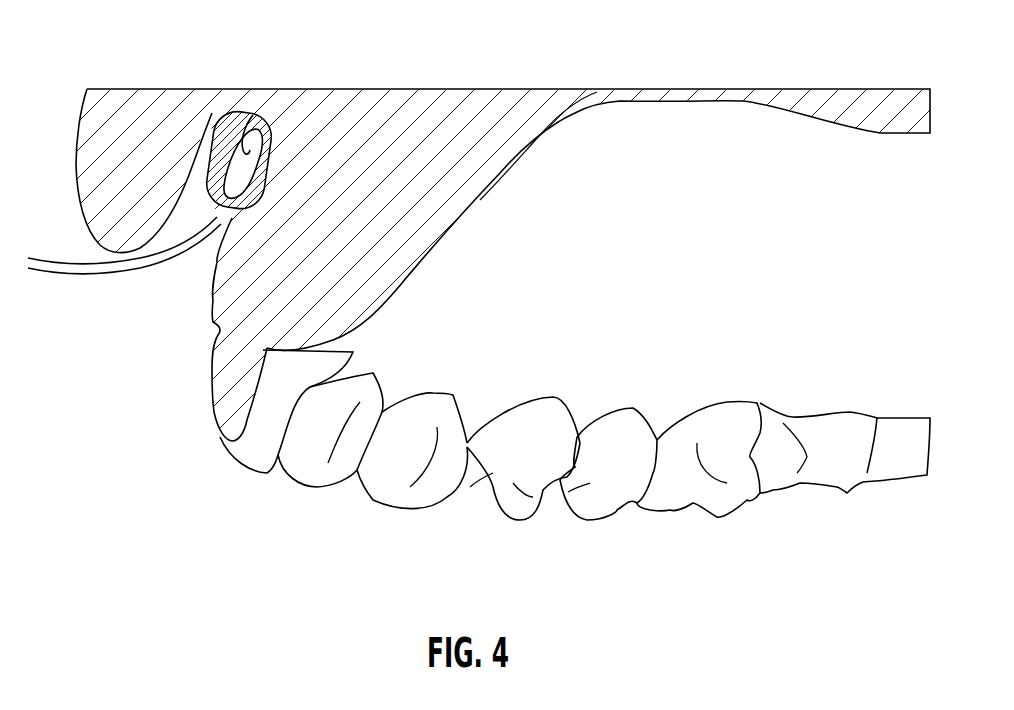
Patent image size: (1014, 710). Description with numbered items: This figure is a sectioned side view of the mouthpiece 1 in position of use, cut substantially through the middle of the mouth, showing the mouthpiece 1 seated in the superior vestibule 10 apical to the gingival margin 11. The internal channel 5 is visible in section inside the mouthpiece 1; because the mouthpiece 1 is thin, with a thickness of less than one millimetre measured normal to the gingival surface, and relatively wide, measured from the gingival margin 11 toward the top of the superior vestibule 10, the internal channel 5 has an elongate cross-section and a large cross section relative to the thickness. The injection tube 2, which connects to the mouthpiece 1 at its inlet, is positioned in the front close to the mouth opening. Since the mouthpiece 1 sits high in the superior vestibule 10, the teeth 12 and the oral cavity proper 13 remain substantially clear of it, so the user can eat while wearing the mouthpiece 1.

The mouthpiece 1 is at (253, 115).
The injection tube 2 is at (65, 257).
The internal channel 5 is at (235, 130).
The superior vestibule 10 is at (143, 277).
The gingival margin 11 is at (212, 333).
The teeth 12 is at (407, 527).
The oral cavity proper 13 is at (806, 249).